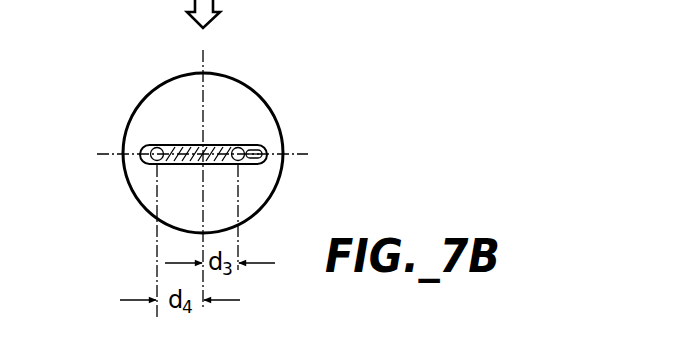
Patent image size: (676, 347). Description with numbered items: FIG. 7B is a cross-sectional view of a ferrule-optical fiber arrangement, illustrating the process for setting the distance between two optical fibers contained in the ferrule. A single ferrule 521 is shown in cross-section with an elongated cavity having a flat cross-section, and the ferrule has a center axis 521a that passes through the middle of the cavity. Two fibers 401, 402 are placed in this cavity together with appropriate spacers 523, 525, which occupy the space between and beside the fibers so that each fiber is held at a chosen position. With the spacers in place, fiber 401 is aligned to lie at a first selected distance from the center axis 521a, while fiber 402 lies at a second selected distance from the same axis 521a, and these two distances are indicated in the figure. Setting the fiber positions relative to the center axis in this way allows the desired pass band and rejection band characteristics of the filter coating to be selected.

The ferrule 521 is at (284, 140).
The center axis 521a is at (213, 139).
The spacer 523 is at (181, 142).
The spacer 525 is at (254, 134).
The optical fiber 401 is at (153, 168).
The optical fiber 402 is at (242, 168).